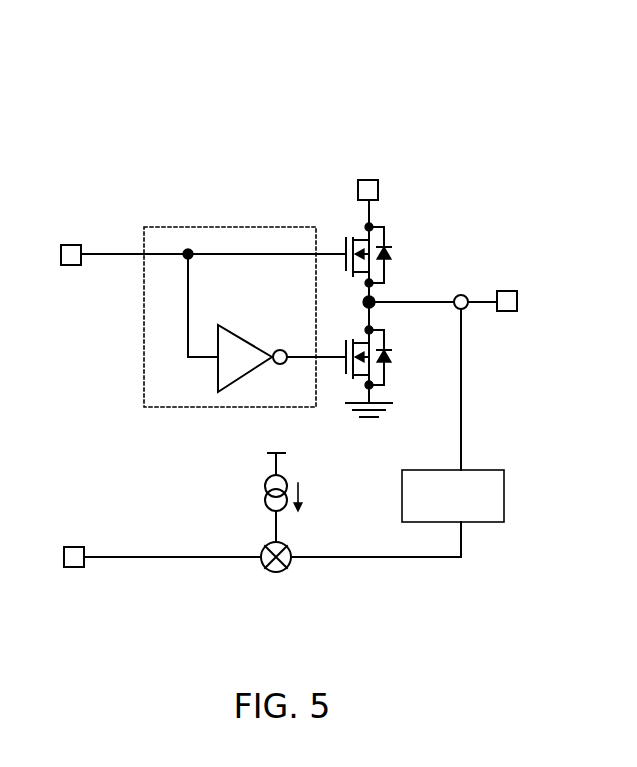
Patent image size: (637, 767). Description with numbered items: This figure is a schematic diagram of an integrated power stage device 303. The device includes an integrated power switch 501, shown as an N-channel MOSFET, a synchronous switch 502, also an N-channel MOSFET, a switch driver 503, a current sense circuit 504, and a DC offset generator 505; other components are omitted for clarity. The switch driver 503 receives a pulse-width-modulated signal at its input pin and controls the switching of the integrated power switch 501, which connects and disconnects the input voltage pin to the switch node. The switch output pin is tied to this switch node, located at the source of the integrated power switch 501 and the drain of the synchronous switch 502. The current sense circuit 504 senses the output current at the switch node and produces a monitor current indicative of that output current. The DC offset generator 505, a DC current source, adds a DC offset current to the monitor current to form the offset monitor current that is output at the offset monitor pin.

The integrated power stage device 303 is at (142, 102).
The integrated power switch 501 is at (394, 255).
The synchronous switch 502 is at (394, 359).
The switch driver 503 is at (258, 226).
The current sense circuit 504 is at (487, 470).
The DC offset generator 505 is at (268, 497).